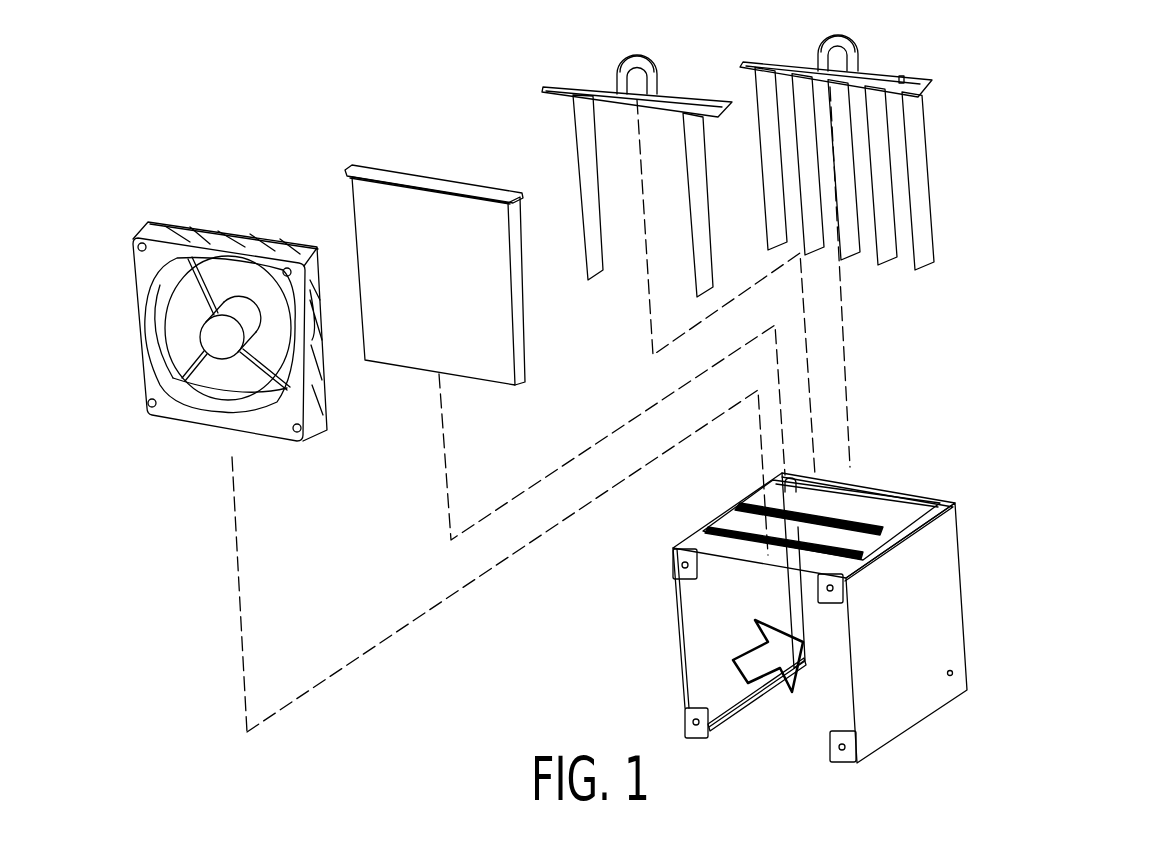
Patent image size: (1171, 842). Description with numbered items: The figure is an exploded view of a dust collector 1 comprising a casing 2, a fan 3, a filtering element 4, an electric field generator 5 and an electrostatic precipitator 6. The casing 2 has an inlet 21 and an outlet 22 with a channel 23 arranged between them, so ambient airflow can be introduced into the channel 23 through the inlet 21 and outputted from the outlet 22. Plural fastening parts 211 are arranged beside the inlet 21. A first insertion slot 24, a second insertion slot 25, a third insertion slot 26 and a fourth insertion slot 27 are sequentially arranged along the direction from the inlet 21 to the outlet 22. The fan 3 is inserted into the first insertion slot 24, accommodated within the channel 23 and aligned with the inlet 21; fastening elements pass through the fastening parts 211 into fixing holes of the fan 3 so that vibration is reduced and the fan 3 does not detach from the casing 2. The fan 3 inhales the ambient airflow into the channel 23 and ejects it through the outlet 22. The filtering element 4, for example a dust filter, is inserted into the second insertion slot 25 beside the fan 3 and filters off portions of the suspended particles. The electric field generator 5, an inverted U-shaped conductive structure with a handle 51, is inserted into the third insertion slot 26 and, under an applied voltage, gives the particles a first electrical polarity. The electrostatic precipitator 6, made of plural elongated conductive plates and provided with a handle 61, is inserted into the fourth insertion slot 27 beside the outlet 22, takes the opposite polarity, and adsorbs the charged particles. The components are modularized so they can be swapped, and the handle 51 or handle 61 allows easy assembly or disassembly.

The dust collector 1 is at (1152, 99).
The casing 2 is at (920, 679).
The inlet 21 is at (778, 715).
The fastening parts 211 is at (684, 706).
The outlet 22 is at (978, 596).
The channel 23 is at (751, 659).
The first insertion slot 24 is at (683, 547).
The second insertion slot 25 is at (718, 524).
The third insertion slot 26 is at (773, 506).
The fourth insertion slot 27 is at (890, 498).
The fan 3 is at (148, 262).
The filtering element 4 is at (401, 173).
The electric field generator 5 is at (565, 83).
The handle 51 is at (634, 60).
The electrostatic precipitator 6 is at (775, 63).
The handle 61 is at (845, 43).